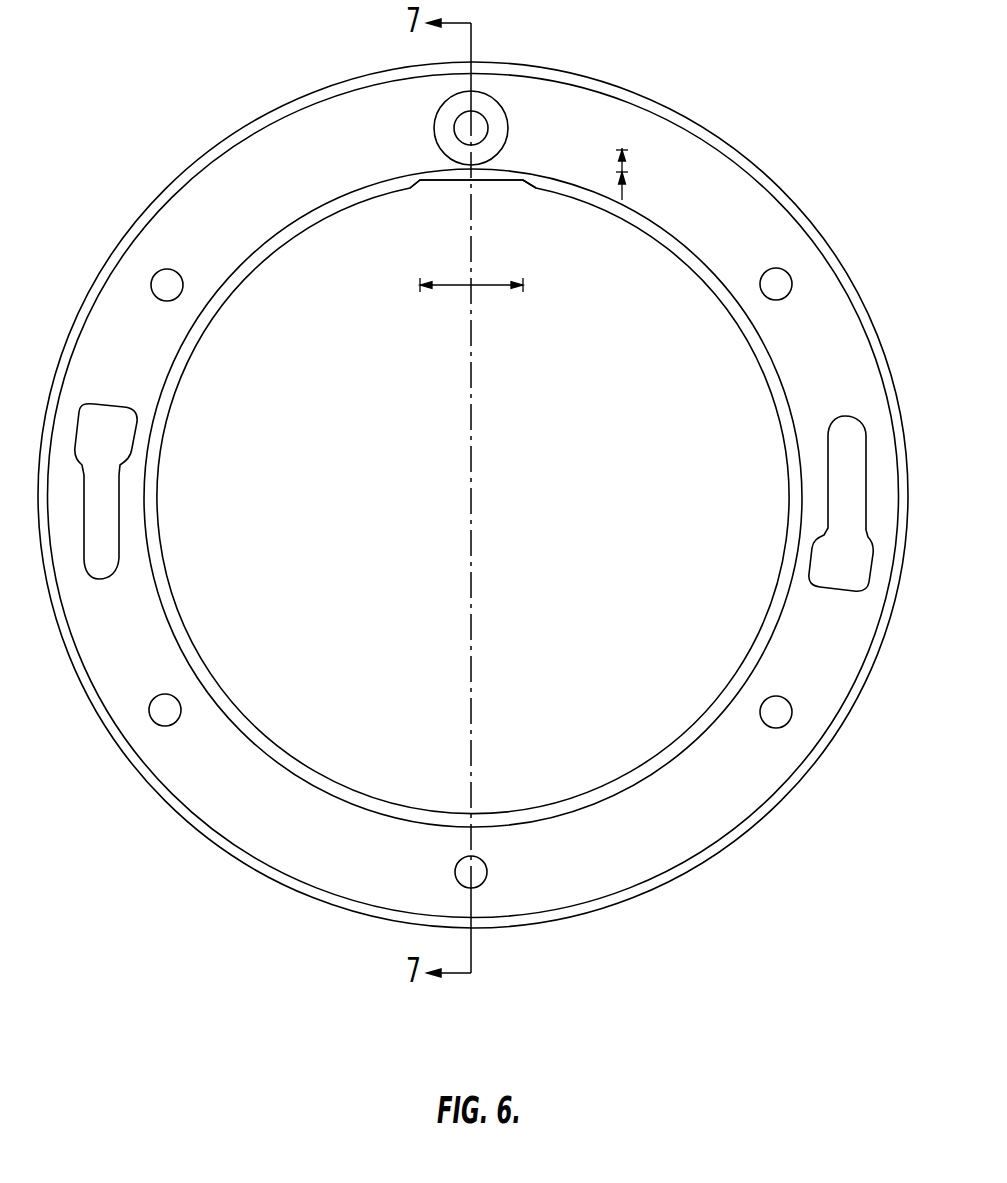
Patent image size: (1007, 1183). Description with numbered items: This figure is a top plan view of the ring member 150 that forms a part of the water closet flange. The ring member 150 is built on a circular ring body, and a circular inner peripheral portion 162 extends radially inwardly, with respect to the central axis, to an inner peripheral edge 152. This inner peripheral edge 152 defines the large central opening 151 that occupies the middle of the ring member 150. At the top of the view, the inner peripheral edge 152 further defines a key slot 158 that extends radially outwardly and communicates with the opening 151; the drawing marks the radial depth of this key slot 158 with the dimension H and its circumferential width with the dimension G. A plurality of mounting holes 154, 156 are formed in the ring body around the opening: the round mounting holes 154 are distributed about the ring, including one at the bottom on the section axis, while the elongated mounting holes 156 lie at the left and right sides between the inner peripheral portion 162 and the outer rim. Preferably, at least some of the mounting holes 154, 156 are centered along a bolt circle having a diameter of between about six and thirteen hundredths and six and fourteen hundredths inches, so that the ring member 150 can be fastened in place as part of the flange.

The ring member 150 is at (700, 75).
The opening 151 is at (651, 296).
The inner peripheral edge 152 is at (681, 735).
The mounting holes 154 is at (181, 291).
The mounting holes 156 is at (98, 578).
The key slot 158 is at (452, 181).
The inner peripheral portion 162 is at (735, 688).
The notch height dimension H is at (622, 150).
The notch width dimension G is at (480, 286).